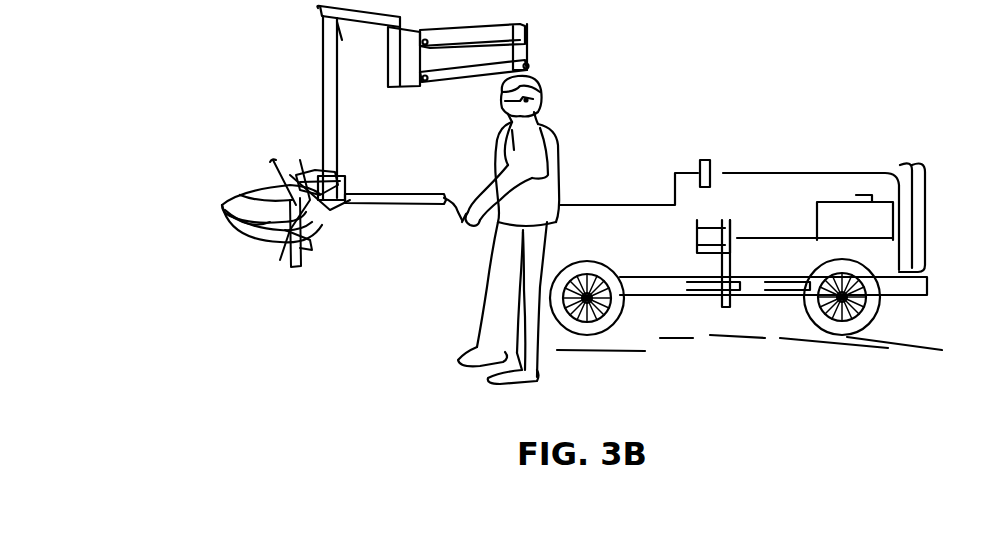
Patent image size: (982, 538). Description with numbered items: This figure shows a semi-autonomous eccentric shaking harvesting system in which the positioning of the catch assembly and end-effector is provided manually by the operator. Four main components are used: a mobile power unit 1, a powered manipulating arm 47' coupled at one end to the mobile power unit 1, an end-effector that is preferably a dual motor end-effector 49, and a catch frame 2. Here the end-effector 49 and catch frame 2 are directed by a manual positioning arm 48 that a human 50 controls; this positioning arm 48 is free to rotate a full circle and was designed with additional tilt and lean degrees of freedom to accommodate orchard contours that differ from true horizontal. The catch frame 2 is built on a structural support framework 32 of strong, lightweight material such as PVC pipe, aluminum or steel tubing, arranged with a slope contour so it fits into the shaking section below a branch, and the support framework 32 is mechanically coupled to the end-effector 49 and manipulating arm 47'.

The mobile power unit 1 is at (797, 152).
The catch frame 2 is at (228, 187).
The structural support framework 32 is at (265, 222).
The manipulating arm 47' is at (386, 103).
The positioning arm 48 is at (388, 193).
The dual motor end-effector 49 is at (297, 154).
The human operator 50 is at (550, 122).